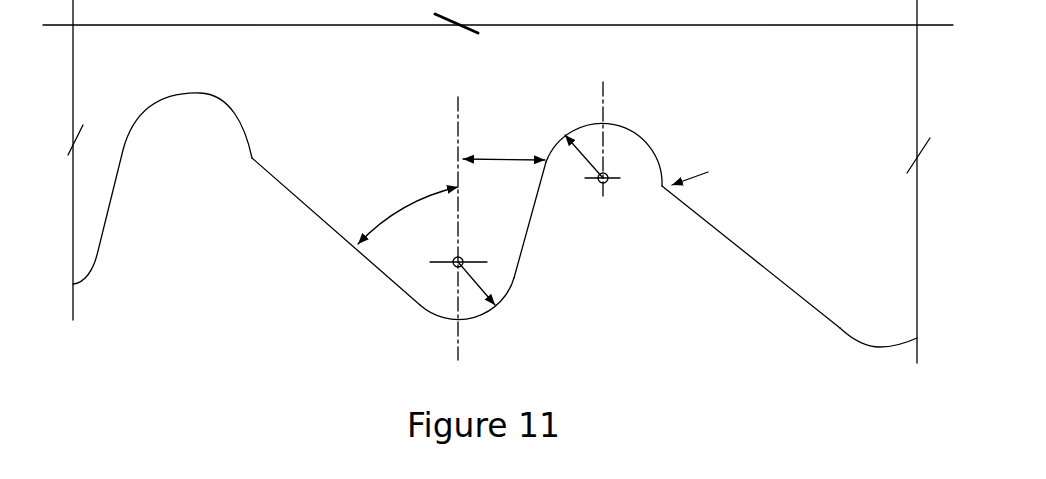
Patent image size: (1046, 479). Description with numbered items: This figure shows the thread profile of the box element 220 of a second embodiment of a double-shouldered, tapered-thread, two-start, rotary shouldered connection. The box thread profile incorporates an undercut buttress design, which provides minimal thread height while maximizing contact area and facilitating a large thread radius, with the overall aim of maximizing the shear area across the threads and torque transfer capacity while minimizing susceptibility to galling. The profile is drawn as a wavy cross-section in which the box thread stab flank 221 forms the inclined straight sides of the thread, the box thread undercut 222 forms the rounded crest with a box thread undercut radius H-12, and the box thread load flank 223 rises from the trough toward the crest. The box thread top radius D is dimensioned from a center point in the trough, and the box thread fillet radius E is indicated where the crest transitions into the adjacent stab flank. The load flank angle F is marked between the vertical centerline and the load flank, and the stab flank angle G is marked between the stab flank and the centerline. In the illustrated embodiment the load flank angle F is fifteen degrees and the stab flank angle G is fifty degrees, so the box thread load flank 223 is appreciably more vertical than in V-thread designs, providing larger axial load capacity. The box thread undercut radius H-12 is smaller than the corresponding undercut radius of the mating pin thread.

The box element 220 is at (873, 90).
The box thread stab flank 221 is at (305, 207).
The box thread undercut 222 is at (205, 95).
The box thread load flank 223 is at (548, 205).
The box thread top radius D is at (475, 281).
The box thread fillet radius E is at (703, 176).
The load flank angle F is at (500, 158).
The stab flank angle G is at (395, 212).
The box thread undercut radius H-12 is at (590, 163).